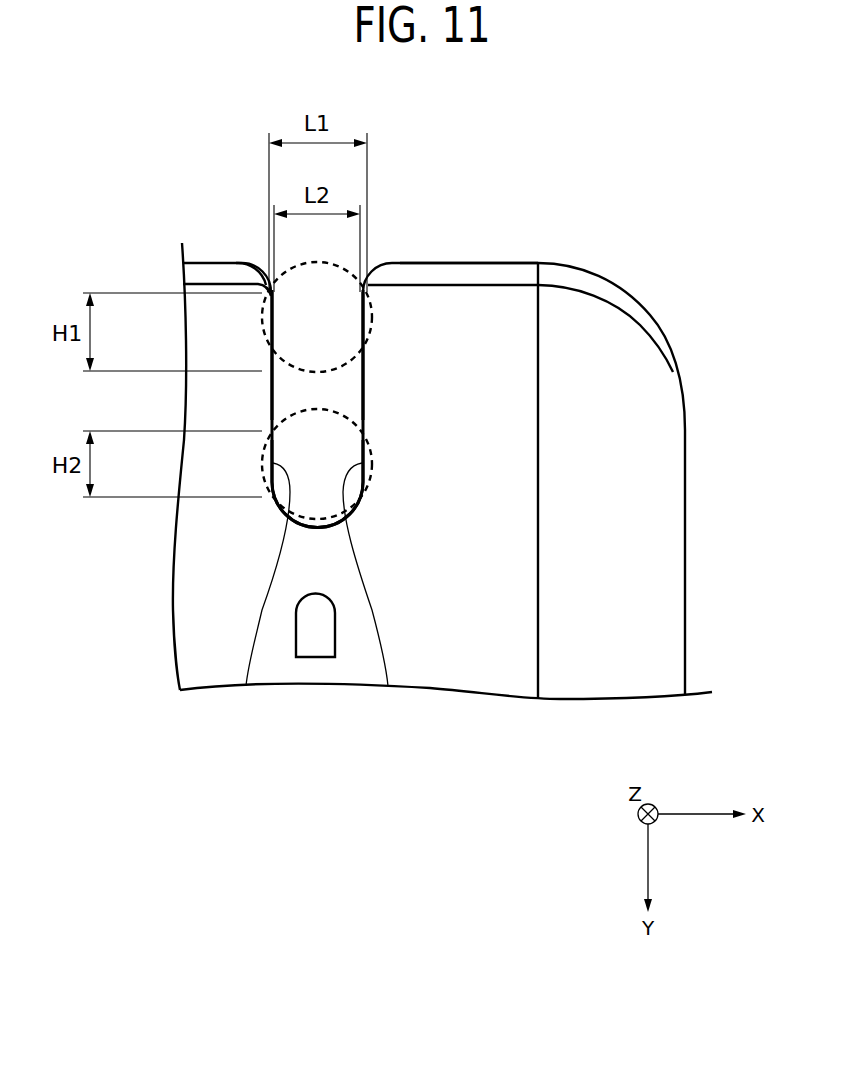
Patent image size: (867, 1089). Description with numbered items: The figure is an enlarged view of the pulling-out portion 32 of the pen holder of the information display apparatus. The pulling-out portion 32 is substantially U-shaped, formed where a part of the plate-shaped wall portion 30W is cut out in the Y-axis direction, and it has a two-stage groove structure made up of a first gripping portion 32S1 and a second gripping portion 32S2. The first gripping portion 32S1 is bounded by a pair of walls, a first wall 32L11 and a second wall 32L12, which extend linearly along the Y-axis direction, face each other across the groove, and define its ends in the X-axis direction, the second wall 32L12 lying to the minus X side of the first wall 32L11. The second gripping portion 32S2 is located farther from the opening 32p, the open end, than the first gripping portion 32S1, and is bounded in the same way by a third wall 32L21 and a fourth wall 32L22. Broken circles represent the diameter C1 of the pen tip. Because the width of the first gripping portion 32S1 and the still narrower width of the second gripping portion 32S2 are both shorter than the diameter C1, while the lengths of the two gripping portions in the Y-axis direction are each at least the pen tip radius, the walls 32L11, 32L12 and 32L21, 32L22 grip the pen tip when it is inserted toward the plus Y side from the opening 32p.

The pulling-out portion 32 is at (365, 390).
The opening 32p is at (262, 286).
The wall portion 30W is at (488, 293).
The diameter of the pen tip C1 is at (372, 300).
The first gripping portion 32S1 is at (368, 347).
The second gripping portion 32S2 is at (362, 457).
The first wall 32L11 is at (365, 348).
The second wall 32L12 is at (272, 327).
The third wall 32L21 is at (388, 686).
The fourth wall 32L22 is at (246, 686).